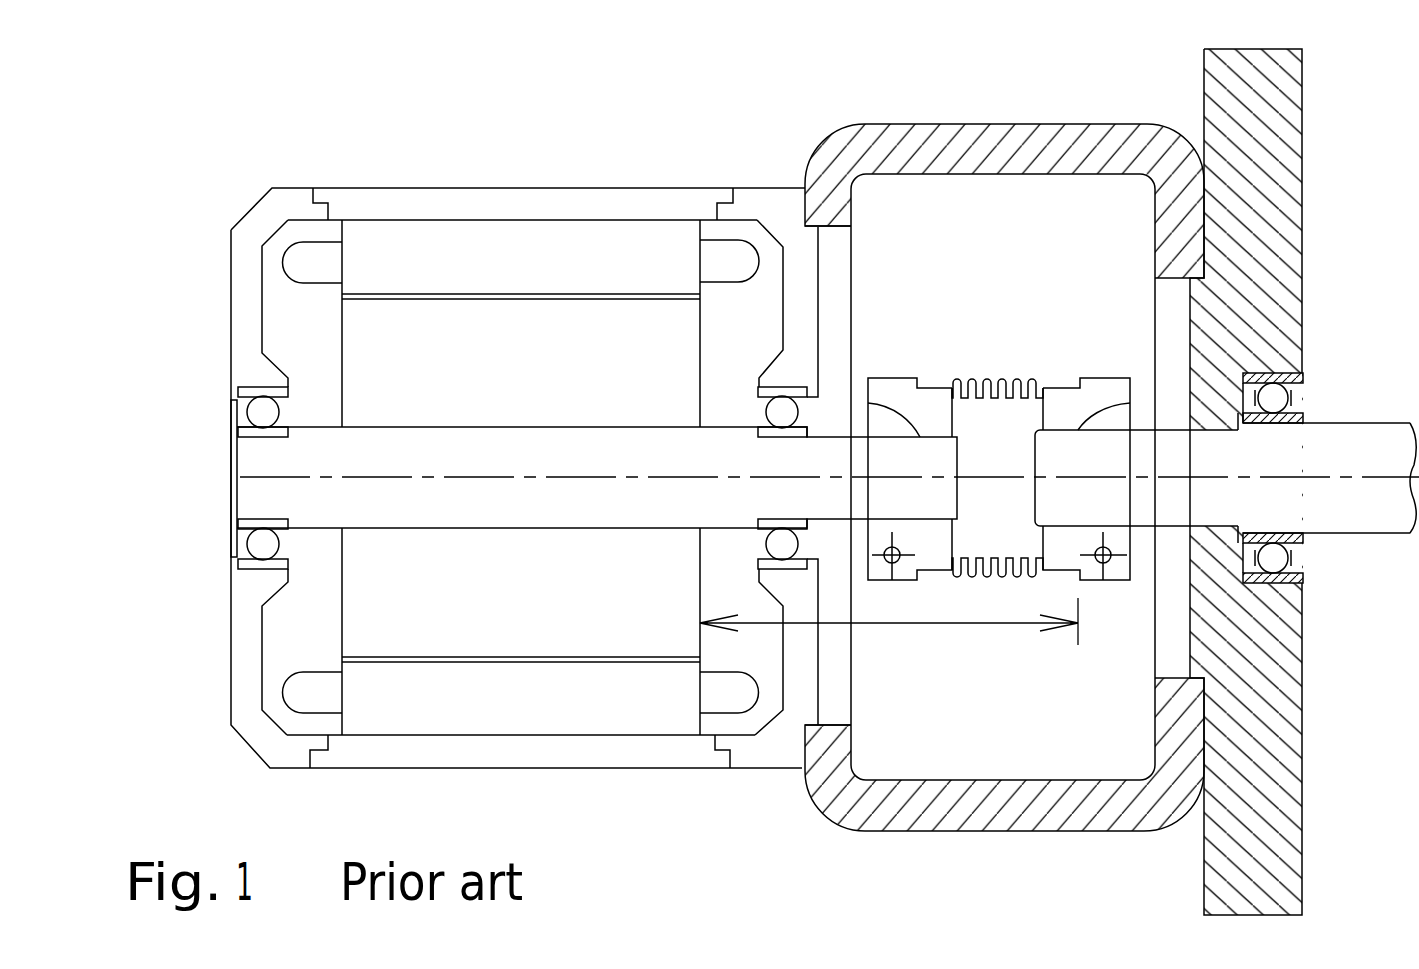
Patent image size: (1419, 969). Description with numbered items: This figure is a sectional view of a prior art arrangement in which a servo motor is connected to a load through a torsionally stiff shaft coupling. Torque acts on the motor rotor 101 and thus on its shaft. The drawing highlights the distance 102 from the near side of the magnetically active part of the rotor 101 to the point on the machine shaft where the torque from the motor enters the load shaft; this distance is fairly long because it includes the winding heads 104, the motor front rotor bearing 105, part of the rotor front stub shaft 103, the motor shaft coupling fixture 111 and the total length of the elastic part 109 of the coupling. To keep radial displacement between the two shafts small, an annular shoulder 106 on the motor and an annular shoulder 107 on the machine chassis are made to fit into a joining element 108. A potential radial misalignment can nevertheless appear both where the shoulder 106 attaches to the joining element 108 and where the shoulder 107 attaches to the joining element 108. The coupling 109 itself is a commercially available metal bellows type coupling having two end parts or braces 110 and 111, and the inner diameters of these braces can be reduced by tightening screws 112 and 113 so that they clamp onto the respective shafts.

The motor rotor 101 is at (358, 388).
The distance 102 is at (889, 620).
The rotor front stub shaft 103 is at (918, 478).
The winding heads 104 is at (715, 262).
The motor front rotor bearing 105 is at (778, 410).
The annular shoulder 106 is at (812, 243).
The annular shoulder 107 is at (1200, 294).
The joining element 108 is at (923, 160).
The coupling 109 is at (993, 380).
The end part 110 is at (1097, 395).
The motor shaft coupling fixture 111 is at (880, 385).
The screw 112 is at (895, 563).
The screw 113 is at (1105, 563).